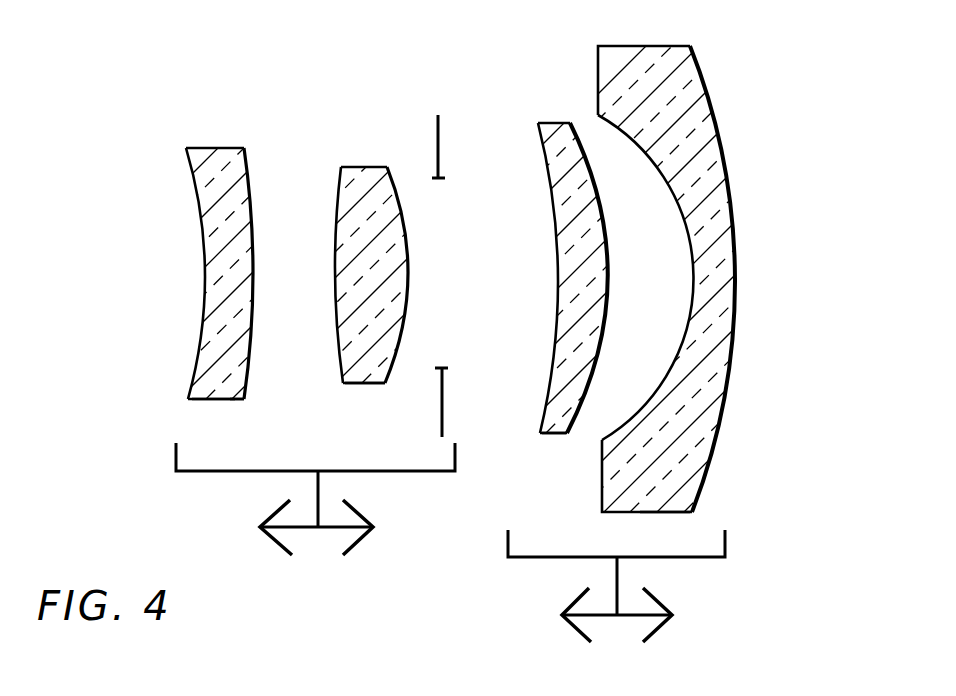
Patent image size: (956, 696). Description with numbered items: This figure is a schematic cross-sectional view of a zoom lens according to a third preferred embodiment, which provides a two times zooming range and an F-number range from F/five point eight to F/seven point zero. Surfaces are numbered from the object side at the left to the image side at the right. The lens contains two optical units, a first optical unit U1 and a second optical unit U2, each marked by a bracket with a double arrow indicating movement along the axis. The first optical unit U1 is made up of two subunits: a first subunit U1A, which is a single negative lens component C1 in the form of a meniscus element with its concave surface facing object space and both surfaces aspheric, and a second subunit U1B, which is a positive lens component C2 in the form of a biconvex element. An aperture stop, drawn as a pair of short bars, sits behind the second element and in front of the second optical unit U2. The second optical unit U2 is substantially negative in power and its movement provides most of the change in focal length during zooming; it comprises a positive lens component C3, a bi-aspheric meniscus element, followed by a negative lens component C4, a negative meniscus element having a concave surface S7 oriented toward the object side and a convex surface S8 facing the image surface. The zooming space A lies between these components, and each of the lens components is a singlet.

The concave surface S7 is at (640, 152).
The convex surface S8 is at (708, 66).
The first optical unit U1 is at (315, 521).
The first lens subunit U1A is at (213, 390).
The second lens subunit U1B is at (350, 387).
The second optical unit U2 is at (616, 605).
The lens component C1 is at (232, 400).
The lens component C2 is at (382, 385).
The lens component C3 is at (552, 435).
The lens component C4 is at (668, 482).
The zooming space A is at (502, 257).